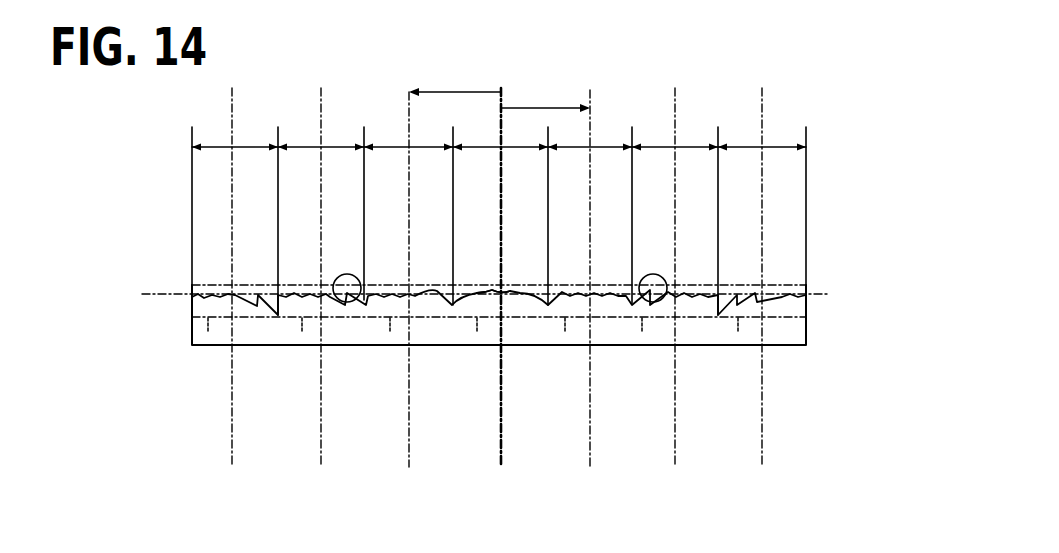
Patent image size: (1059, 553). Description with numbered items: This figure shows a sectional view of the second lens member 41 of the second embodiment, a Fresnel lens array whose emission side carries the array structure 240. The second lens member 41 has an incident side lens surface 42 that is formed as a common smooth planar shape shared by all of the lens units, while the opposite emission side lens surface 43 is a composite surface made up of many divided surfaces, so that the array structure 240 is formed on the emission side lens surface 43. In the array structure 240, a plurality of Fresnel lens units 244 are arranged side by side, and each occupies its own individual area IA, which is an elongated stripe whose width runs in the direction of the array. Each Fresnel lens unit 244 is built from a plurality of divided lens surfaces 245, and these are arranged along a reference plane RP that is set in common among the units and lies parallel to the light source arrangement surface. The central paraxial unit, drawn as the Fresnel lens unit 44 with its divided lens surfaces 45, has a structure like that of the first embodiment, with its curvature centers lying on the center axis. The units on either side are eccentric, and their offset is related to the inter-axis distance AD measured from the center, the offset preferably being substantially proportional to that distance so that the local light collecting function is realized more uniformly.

The second lens member 41 is at (165, 133).
The incident side lens surface 42 is at (796, 349).
The emission side lens surface 43 is at (806, 290).
The Fresnel lens unit 44 is at (472, 345).
The divided lens surface 45 is at (492, 290).
The array structure 240 is at (188, 306).
The Fresnel lens unit 244 is at (203, 345).
The divided lens surface 245 is at (333, 297).
The individual area IA is at (222, 145).
The inter-axis distance AD is at (458, 90).
The reference plane RP is at (152, 290).